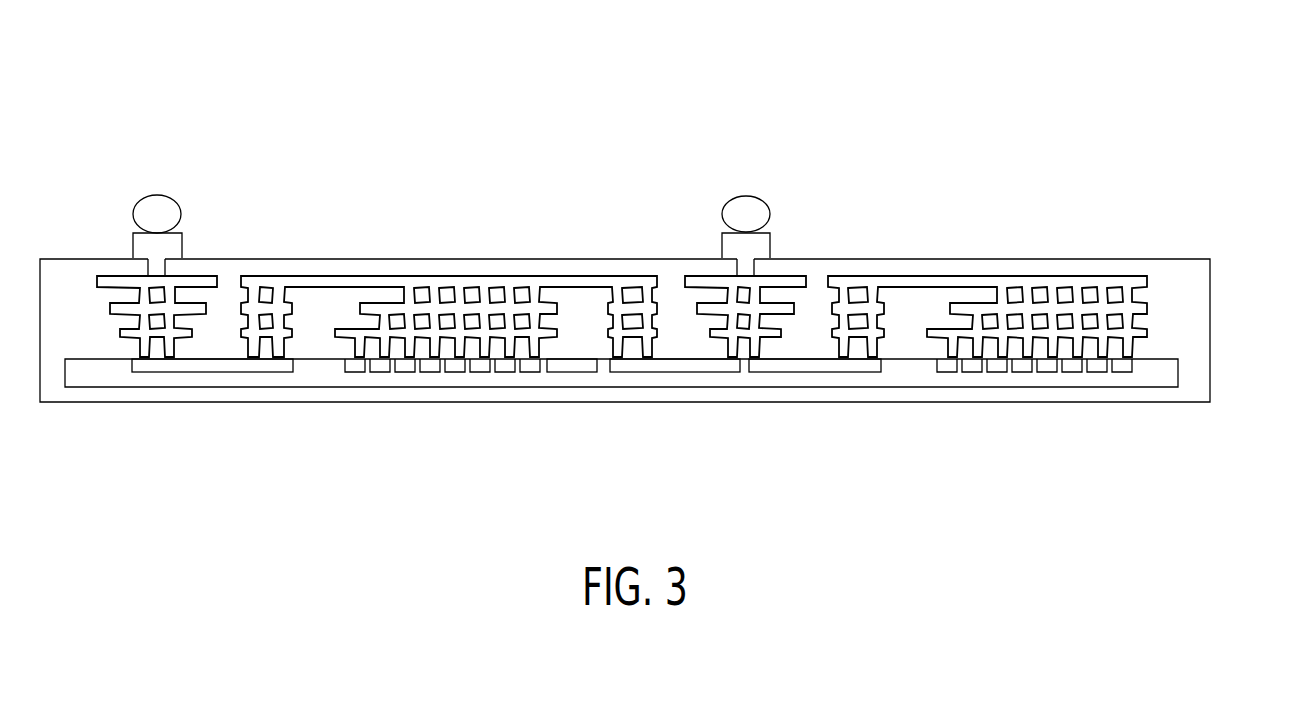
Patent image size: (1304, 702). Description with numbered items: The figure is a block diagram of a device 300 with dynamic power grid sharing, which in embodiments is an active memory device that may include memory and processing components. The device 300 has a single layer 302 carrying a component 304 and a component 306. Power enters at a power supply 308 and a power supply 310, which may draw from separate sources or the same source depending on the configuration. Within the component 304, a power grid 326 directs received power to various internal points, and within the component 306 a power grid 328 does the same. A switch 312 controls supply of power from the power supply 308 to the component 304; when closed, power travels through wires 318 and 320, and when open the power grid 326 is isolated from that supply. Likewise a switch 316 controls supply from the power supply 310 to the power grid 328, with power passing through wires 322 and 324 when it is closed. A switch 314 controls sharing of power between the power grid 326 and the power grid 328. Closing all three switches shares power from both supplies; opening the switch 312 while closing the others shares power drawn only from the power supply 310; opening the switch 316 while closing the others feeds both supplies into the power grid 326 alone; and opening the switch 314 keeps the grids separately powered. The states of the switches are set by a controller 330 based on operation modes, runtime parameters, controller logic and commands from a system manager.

The device 300 is at (678, 90).
The single layer 302 is at (1212, 335).
The component 304 is at (440, 386).
The component 306 is at (1024, 389).
The power supply 308 is at (157, 195).
The power supply 310 is at (747, 196).
The switch 312 is at (210, 373).
The switch 314 is at (680, 373).
The switch 316 is at (812, 373).
The wire 318 is at (110, 305).
The wire 320 is at (378, 276).
The wire 322 is at (797, 276).
The wire 324 is at (960, 276).
The power grid 326 is at (410, 348).
The power grid 328 is at (978, 342).
The controller 330 is at (576, 373).